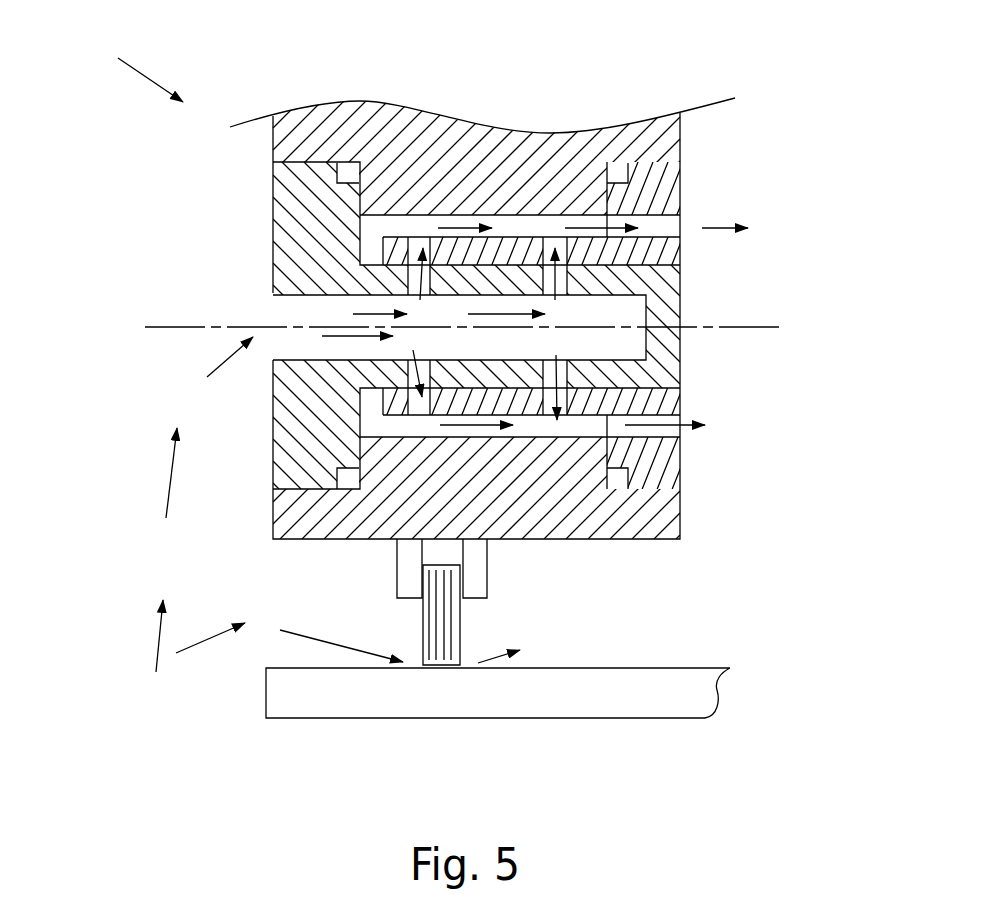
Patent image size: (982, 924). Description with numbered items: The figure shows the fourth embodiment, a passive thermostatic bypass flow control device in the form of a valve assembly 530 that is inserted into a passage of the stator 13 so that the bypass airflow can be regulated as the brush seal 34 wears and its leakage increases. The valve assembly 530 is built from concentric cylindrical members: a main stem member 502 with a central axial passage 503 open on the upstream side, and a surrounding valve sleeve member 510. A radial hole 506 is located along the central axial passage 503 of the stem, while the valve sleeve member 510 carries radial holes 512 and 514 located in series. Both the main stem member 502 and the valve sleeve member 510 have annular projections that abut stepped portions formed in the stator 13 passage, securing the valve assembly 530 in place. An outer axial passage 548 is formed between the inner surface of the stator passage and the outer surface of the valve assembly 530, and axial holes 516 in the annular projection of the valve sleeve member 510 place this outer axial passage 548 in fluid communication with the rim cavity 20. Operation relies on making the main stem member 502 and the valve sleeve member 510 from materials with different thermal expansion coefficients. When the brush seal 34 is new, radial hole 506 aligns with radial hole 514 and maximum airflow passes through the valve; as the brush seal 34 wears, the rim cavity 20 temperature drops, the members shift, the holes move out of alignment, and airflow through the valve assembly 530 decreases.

The valve assembly 530 is at (125, 70).
The stator 13 is at (363, 118).
The outer axial passage 548 is at (523, 227).
The radial hole 514 is at (421, 240).
The radial hole 512 is at (553, 245).
The main stem member 502 is at (292, 208).
The valve sleeve member 510 is at (655, 195).
The axial holes 516 is at (668, 230).
The rim cavity 20 is at (861, 310).
The central axial passage 503 is at (300, 313).
The radial hole 506 is at (400, 360).
The brush seal 34 is at (417, 623).